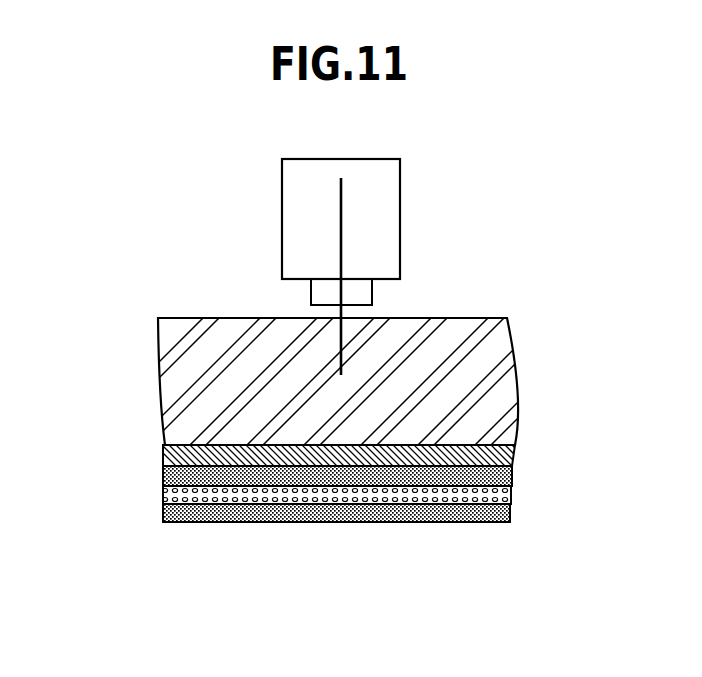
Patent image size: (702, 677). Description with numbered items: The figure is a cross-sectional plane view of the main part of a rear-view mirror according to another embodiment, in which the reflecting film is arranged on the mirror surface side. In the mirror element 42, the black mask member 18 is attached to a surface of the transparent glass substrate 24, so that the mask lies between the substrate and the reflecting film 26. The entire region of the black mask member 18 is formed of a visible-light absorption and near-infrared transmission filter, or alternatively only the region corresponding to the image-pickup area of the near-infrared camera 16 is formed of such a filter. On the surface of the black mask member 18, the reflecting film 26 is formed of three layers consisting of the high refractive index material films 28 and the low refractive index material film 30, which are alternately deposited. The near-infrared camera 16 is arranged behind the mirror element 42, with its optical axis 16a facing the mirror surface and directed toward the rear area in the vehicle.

The near-infrared camera 16 is at (400, 165).
The optical axis 16a is at (342, 203).
The transparent glass substrate 24 is at (463, 323).
The black mask member 18 is at (163, 452).
The reflecting film 26 is at (277, 503).
The high refractive index material film 28 is at (163, 478).
The low refractive index material film 30 is at (163, 496).
The mirror element 42 is at (538, 320).